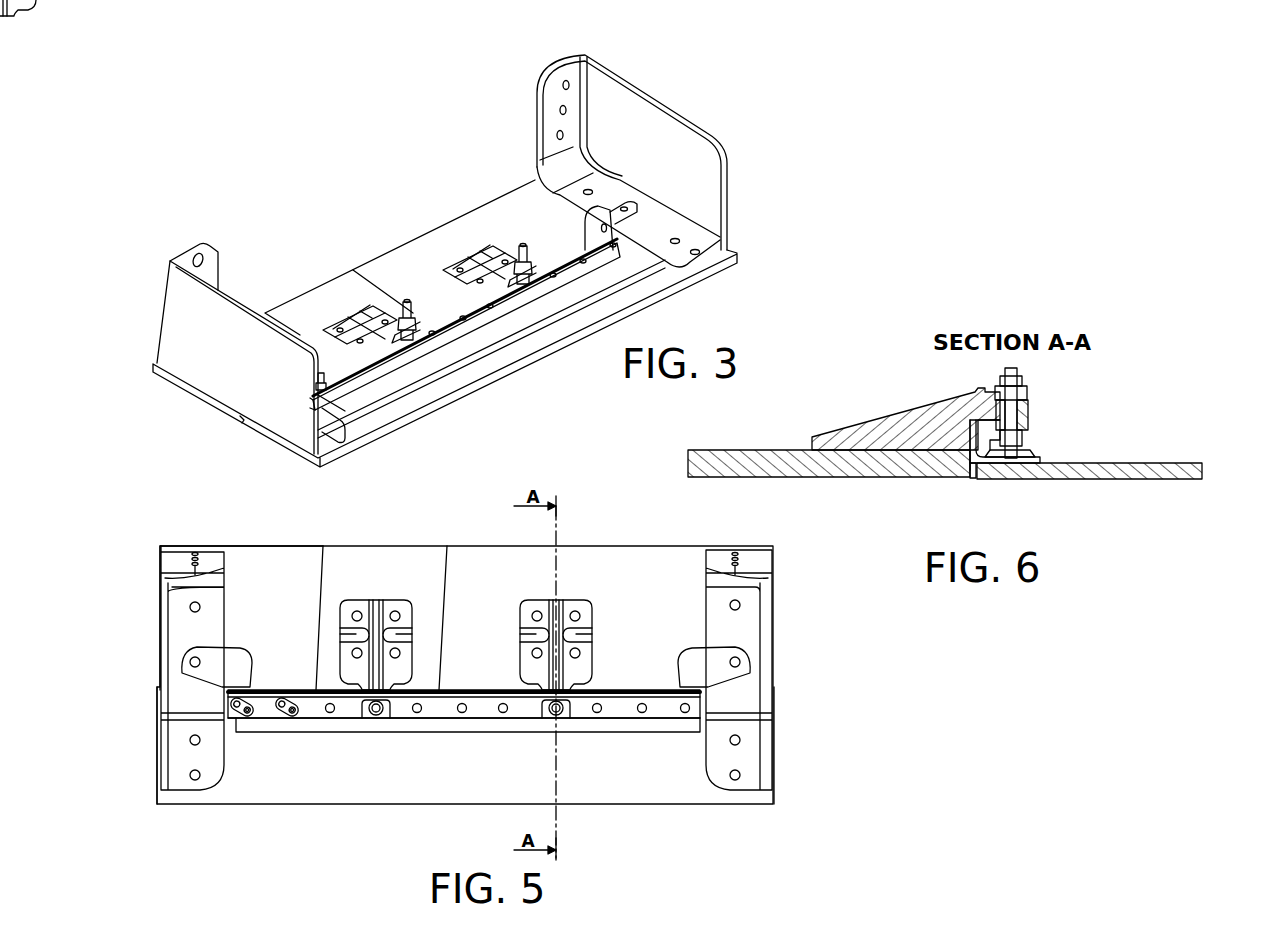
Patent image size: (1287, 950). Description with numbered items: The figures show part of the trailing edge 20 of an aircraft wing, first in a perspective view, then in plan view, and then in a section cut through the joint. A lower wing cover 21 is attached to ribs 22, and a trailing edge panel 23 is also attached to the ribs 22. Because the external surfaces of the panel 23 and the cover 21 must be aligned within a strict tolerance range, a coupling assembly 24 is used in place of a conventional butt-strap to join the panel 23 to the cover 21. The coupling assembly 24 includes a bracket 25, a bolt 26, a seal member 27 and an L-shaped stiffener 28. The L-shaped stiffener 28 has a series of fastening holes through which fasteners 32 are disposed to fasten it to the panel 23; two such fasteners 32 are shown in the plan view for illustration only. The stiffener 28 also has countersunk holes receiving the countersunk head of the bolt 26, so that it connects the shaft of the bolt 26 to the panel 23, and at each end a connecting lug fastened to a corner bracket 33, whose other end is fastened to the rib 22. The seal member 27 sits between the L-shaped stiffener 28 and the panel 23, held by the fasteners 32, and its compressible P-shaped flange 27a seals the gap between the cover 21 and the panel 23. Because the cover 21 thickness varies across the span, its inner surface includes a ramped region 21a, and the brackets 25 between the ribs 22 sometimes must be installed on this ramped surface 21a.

In FIG. 3, the trailing edge 20 is at (742, 148).
In FIG. 3, the lower wing cover 21 is at (385, 259).
In FIG. 5, the lower wing cover 21 is at (487, 546).
In FIG. 6, the lower wing cover 21 is at (688, 464).
In FIG. 5, the ramped region 21a is at (410, 546).
In FIG. 3, the rib 22 is at (162, 318).
In FIG. 5, the rib 22 is at (182, 608).
In FIG. 3, the trailing edge panel 23 is at (490, 372).
In FIG. 5, the trailing edge panel 23 is at (430, 804).
In FIG. 6, the trailing edge panel 23 is at (1202, 472).
In FIG. 3, the coupling assembly 24 is at (452, 205).
In FIG. 3, the bracket 25 is at (420, 294).
In FIG. 5, the bracket 25 is at (373, 609).
In FIG. 6, the bracket 25 is at (900, 415).
In FIG. 3, the bolt 26 is at (424, 317).
In FIG. 5, the bolt 26 is at (376, 718).
In FIG. 6, the bolt 26 is at (1020, 437).
In FIG. 3, the seal member 27 is at (473, 306).
In FIG. 5, the seal member 27 is at (625, 732).
In FIG. 6, the seal member 27 is at (1005, 445).
In FIG. 6, the P-shaped flange 27a is at (973, 478).
In FIG. 5, the L-shaped stiffener 28 is at (668, 718).
In FIG. 5, the fastener 32 is at (248, 720).
In FIG. 5, the corner bracket 33 is at (190, 672).